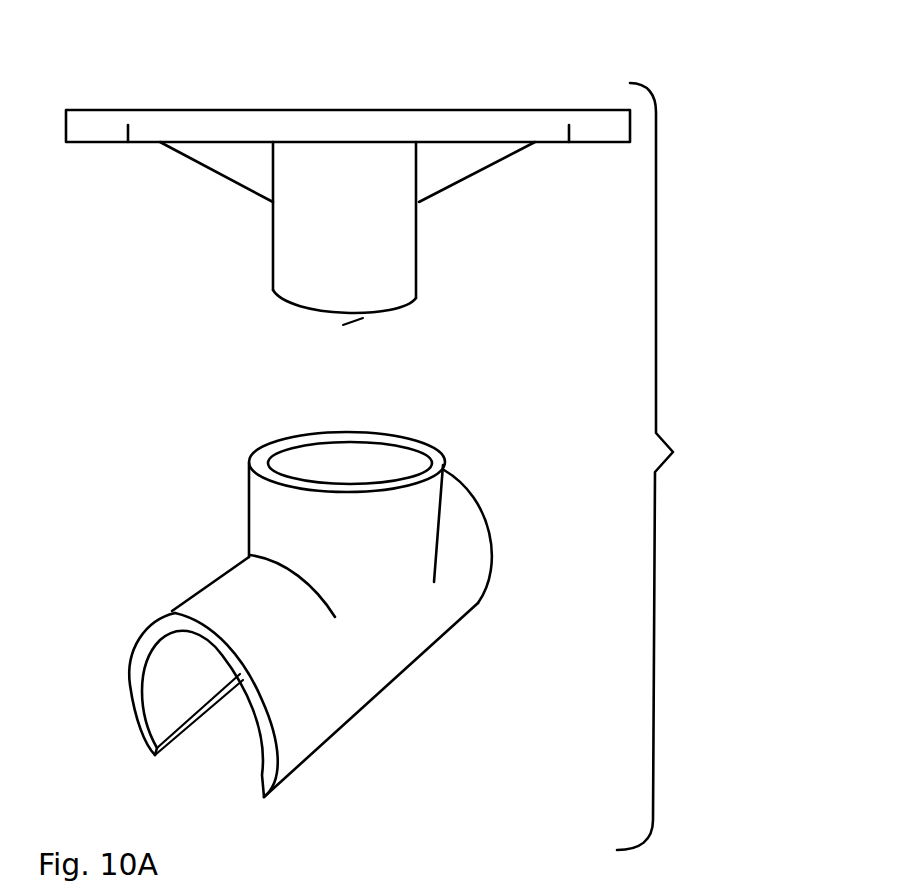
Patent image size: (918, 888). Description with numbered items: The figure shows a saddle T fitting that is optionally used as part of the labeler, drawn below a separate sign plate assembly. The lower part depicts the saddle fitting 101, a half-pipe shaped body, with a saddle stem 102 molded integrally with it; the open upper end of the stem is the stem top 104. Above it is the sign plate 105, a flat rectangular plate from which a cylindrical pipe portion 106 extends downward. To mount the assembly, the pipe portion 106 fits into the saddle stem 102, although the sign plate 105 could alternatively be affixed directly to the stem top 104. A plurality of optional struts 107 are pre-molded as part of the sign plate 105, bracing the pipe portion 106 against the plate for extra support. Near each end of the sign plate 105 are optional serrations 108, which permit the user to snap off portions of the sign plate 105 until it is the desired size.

The saddle fitting 101 is at (238, 595).
The saddle stem 102 is at (375, 545).
The stem top 104 is at (267, 452).
The sign plate 105 is at (487, 110).
The pipe portion 106 is at (293, 270).
The struts 107 is at (216, 175).
The serrations 108 is at (128, 142).